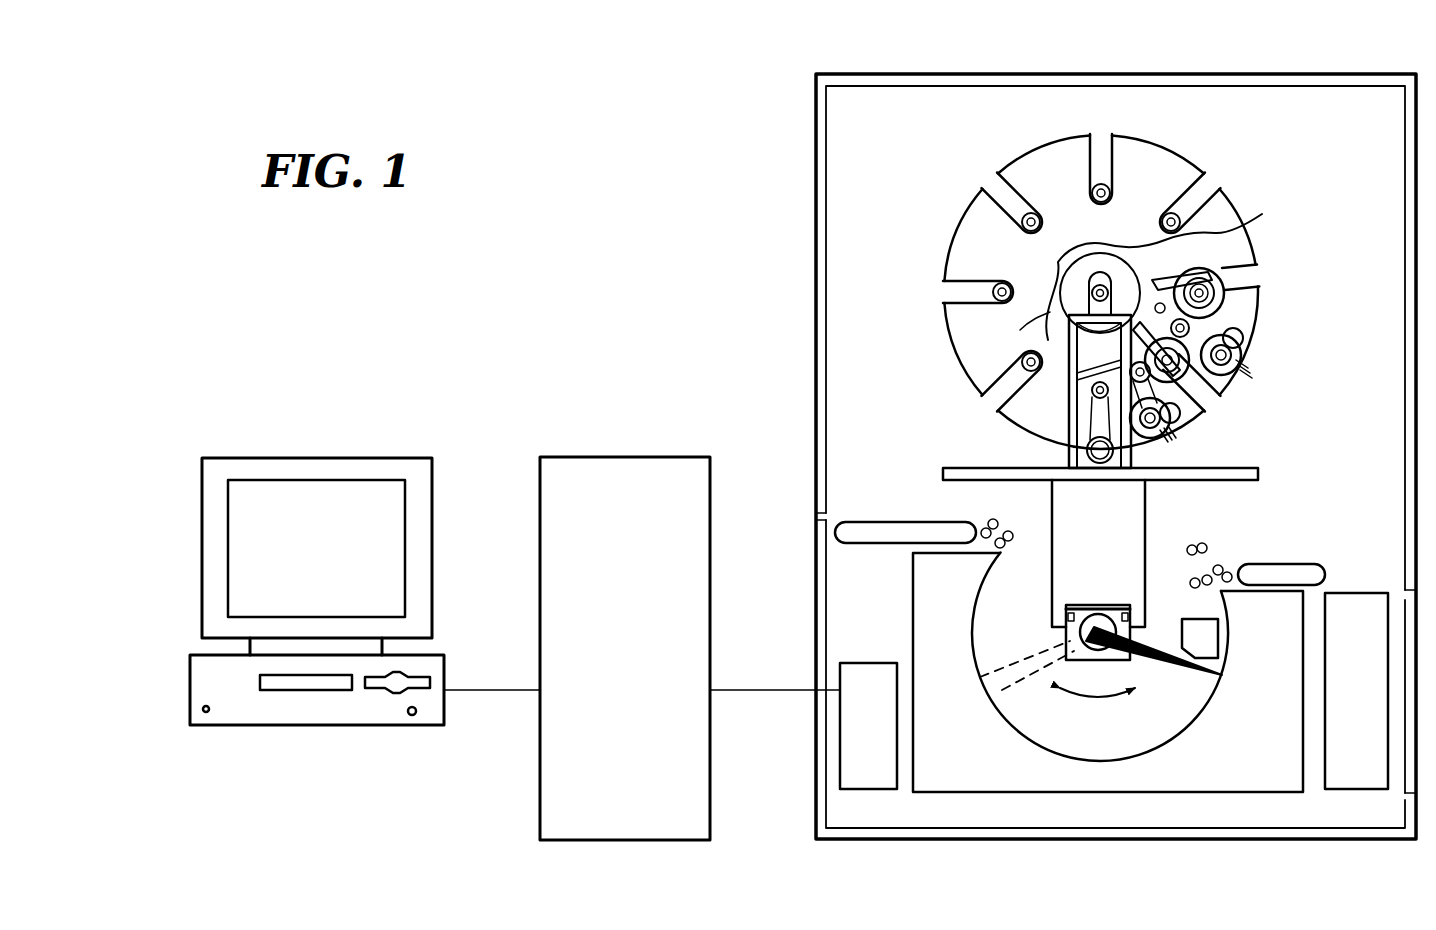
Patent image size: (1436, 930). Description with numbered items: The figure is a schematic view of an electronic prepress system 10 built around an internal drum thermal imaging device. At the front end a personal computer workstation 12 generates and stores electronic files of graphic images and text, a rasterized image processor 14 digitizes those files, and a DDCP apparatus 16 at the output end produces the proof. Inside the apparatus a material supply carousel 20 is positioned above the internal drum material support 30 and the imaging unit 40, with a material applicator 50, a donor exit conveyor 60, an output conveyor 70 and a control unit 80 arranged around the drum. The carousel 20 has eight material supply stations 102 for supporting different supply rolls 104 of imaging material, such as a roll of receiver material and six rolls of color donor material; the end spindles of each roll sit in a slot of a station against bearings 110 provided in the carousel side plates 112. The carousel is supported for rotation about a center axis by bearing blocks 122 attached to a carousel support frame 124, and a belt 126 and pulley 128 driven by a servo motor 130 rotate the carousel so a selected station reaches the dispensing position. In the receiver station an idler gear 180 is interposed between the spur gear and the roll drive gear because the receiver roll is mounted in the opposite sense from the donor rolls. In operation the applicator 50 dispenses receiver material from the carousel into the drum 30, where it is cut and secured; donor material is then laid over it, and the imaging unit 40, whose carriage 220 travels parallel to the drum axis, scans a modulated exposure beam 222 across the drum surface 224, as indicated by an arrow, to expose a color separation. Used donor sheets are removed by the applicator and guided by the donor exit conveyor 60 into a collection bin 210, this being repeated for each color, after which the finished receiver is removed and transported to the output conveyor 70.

The electronic prepress system 10 is at (541, 146).
The personal computer workstation 12 is at (340, 457).
The rasterized image processor 14 is at (627, 457).
The DDCP apparatus 16 is at (1236, 70).
The material supply carousel 20 is at (1250, 168).
The internal drum material support 30 is at (976, 651).
The imaging unit 40 is at (1077, 637).
The material applicator 50 is at (1200, 638).
The donor exit conveyor 60 is at (1284, 556).
The output conveyor 70 is at (944, 520).
The control unit 80 is at (868, 726).
The material supply station 102 is at (994, 228).
The supply roll 104 is at (1216, 266).
The bearing 110 is at (1056, 168).
The carousel side plate 112 is at (1140, 142).
The bearing block 122 is at (1066, 296).
The carousel support frame 124 is at (1072, 390).
The belt 126 is at (1082, 440).
The pulley 128 is at (1090, 305).
The servo motor 130 is at (1115, 457).
The idler gear 180 is at (1205, 318).
The collection bin 210 is at (1356, 691).
The carriage 220 is at (1064, 655).
The exposure beam 222 is at (1185, 668).
The drum surface 224 is at (1172, 736).